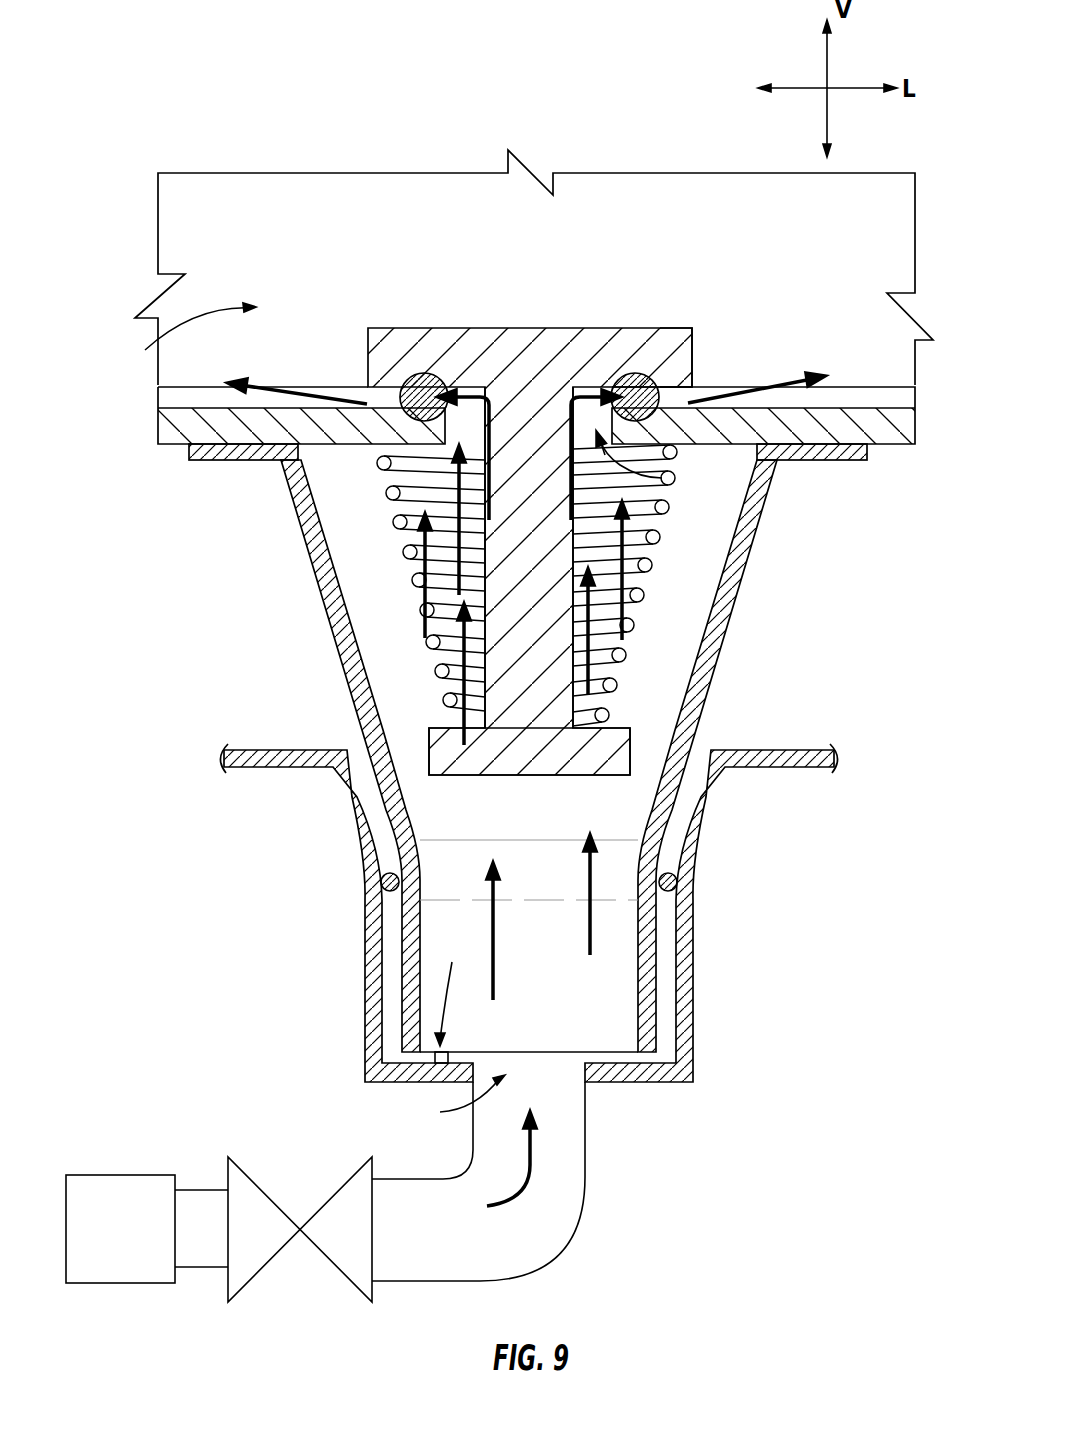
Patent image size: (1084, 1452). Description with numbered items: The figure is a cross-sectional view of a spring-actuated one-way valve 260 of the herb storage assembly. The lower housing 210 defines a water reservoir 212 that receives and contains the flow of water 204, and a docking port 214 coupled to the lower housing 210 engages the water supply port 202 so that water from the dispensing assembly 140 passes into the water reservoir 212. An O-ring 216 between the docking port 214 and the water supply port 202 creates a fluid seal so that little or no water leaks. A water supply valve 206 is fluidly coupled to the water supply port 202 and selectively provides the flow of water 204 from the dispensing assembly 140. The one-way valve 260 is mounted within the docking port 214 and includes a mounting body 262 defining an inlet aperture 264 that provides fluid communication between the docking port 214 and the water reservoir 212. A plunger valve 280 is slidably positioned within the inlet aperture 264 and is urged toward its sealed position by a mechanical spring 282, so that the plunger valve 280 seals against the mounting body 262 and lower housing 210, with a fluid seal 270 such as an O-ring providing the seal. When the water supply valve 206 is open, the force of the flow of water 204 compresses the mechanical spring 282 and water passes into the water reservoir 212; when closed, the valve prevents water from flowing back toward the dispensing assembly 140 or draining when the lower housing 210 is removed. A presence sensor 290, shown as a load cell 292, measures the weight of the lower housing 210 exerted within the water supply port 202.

The dispensing assembly 140 is at (136, 1243).
The water supply port 202 is at (478, 1178).
The flow of water 204 is at (787, 380).
The water supply valve 206 is at (250, 1178).
The lower housing 210 is at (170, 423).
The water reservoir 212 is at (515, 275).
The docking port 214 is at (652, 990).
The O-ring 216 is at (675, 881).
The one-way valve 260 is at (726, 318).
The mounting body 262 is at (680, 386).
The inlet aperture 264 is at (677, 478).
The fluid seal 270 is at (648, 373).
The plunger valve 280 is at (557, 336).
The mechanical spring 282 is at (650, 565).
The presence sensor 290 is at (455, 987).
The load cell 292 is at (446, 1057).